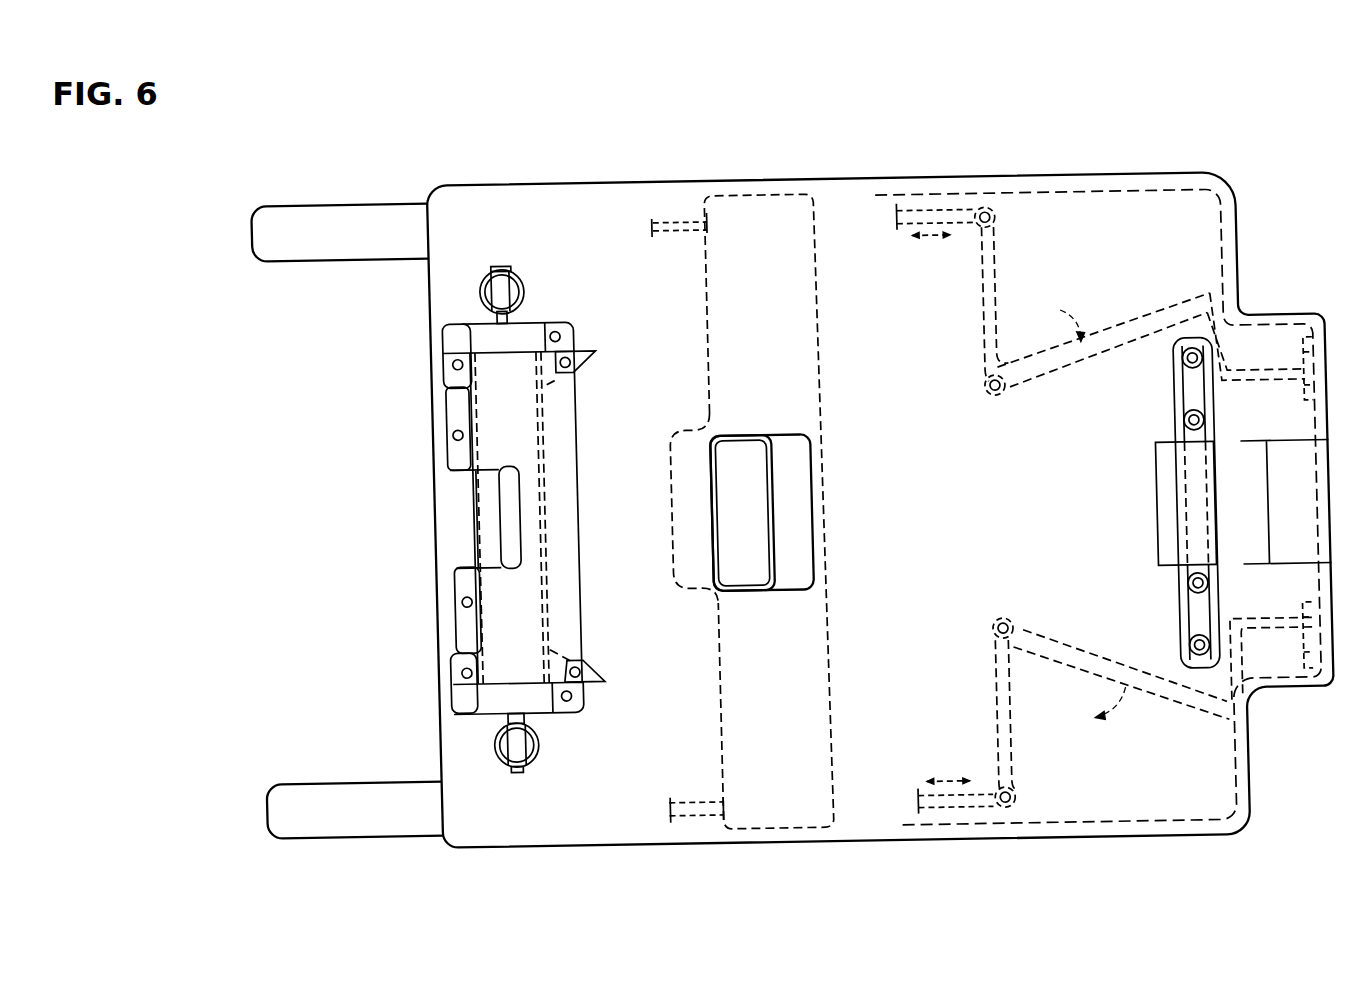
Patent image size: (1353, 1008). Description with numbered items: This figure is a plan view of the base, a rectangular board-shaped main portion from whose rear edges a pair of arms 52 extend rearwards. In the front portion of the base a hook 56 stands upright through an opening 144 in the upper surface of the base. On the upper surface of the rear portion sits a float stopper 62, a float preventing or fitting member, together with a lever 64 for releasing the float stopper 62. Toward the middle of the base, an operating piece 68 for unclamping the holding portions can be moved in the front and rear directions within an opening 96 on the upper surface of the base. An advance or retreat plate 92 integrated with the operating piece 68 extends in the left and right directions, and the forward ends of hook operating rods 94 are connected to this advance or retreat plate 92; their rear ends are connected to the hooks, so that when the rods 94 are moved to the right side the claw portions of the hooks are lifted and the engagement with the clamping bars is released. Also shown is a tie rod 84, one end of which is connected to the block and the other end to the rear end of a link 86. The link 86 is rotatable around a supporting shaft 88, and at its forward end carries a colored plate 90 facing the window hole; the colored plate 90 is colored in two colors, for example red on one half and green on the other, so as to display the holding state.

The arms 52 is at (343, 207).
The hook 56 is at (1183, 529).
The float stopper 62 is at (486, 284).
The lever 64 is at (500, 503).
The operating piece 68 is at (743, 573).
The tie rod 84 is at (930, 214).
The link 86 is at (985, 296).
The supporting shaft 88 is at (988, 391).
The colored plate 90 is at (1296, 351).
The advance or retreat plate 92 is at (823, 305).
The hook operating rods 94 is at (680, 218).
The opening 96 is at (795, 526).
The opening 144 is at (1166, 461).